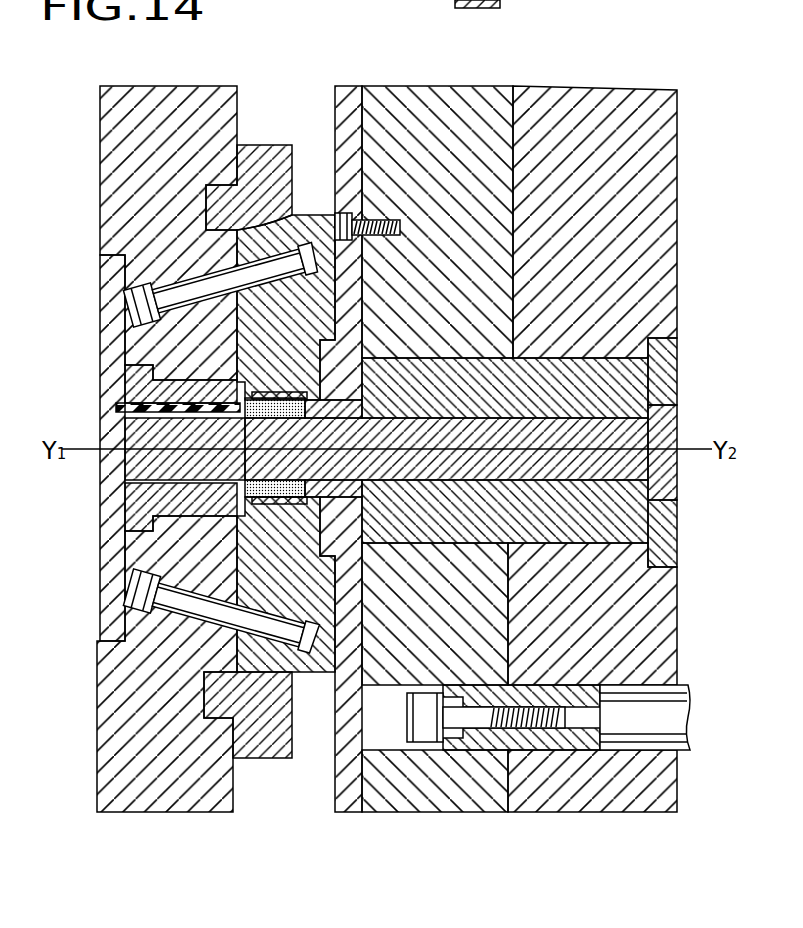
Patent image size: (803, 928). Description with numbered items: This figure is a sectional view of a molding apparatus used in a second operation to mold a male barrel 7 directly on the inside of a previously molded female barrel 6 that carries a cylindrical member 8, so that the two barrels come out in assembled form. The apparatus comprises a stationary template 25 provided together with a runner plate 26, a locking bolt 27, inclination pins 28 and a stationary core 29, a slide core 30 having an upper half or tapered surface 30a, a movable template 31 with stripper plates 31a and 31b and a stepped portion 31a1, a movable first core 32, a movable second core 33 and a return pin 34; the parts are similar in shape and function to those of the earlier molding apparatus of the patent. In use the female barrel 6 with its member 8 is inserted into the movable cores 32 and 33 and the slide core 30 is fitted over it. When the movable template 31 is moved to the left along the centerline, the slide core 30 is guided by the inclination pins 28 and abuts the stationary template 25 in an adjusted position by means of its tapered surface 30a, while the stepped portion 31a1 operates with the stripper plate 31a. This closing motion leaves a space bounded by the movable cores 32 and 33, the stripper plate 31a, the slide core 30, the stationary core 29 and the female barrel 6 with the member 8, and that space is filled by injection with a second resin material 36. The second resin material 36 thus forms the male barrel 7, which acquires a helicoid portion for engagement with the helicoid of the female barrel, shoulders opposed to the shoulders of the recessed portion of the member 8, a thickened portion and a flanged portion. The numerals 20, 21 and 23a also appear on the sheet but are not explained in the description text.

The female barrel 6 is at (296, 398).
The male barrel 7 is at (240, 492).
The member 8 is at (258, 398).
The spindle 20 is at (142, 437).
The member 21 is at (321, 7).
The member 23a is at (460, 13).
The stationary template 25 is at (135, 165).
The runner plate 26 is at (108, 276).
The locking bolt 27 is at (213, 212).
The inclination pins 28 is at (185, 608).
The stationary core 29 is at (157, 507).
The slide core 30 is at (257, 555).
The tapered surface 30a is at (258, 680).
The movable template 31 is at (672, 200).
The stripper plate 31a is at (342, 122).
The stripper plate 31b is at (438, 123).
The stepped portion 31a1 is at (326, 335).
The movable first core 32 is at (668, 430).
The movable second core 33 is at (660, 377).
The return pin 34 is at (650, 745).
The second resin material 36 is at (110, 410).